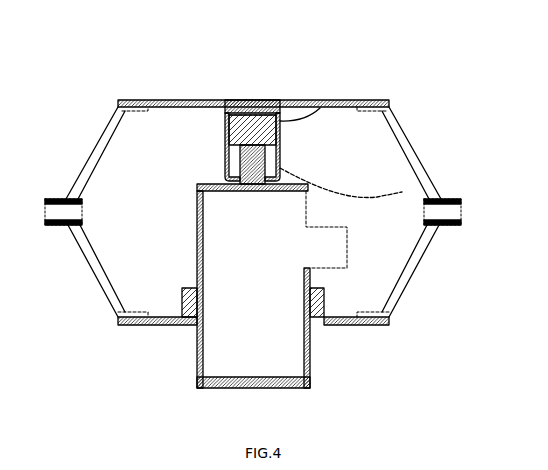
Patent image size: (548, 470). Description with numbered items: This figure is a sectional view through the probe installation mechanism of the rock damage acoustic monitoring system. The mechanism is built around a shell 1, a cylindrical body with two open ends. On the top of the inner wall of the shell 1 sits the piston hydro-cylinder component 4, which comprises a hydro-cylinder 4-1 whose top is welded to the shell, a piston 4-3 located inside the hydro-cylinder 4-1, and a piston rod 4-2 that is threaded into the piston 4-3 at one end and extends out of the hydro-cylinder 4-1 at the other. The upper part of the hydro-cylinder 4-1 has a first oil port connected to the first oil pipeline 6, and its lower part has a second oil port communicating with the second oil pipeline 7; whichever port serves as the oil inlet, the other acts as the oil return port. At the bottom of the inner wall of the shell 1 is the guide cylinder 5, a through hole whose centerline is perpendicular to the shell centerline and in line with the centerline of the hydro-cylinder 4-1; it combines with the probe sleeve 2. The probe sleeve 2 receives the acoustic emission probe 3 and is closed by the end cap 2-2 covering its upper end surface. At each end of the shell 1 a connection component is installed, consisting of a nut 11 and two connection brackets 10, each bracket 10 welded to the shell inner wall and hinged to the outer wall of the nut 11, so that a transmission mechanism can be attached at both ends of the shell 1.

The shell 1 is at (200, 101).
The probe sleeve 2 is at (253, 281).
The end cap 2-2 is at (200, 187).
The acoustic emission probe 3 is at (217, 342).
The piston hydro-cylinder component 4 is at (288, 102).
The hydro-cylinder 4-1 is at (278, 163).
The piston rod 4-2 is at (253, 165).
The piston 4-3 is at (257, 132).
The guide cylinder 5 is at (314, 303).
The first oil pipeline 6 is at (306, 116).
The second oil pipeline 7 is at (377, 197).
The connection bracket 10 is at (412, 153).
The nut 11 is at (446, 200).